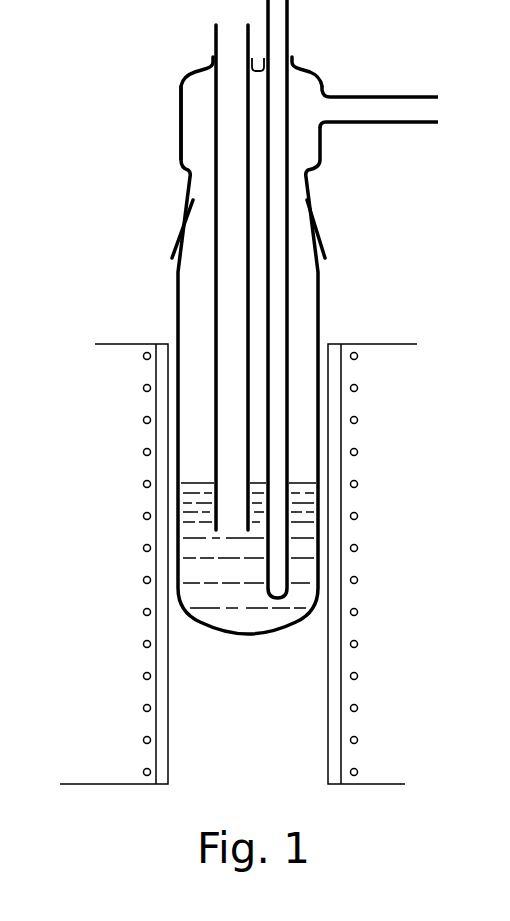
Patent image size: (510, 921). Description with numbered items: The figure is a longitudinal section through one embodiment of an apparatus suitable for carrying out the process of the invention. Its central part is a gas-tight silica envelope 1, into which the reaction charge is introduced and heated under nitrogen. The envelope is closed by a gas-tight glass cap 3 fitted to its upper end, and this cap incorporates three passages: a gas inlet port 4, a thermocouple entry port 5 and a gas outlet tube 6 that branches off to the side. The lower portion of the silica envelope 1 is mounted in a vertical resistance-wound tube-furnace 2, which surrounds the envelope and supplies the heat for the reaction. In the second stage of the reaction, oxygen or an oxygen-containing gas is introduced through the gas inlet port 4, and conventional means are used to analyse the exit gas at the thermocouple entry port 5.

The silica envelope 1 is at (176, 292).
The tube-furnace 2 is at (158, 540).
The glass cap 3 is at (180, 124).
The gas inlet port 4 is at (230, 60).
The thermocouple entry port 5 is at (292, 58).
The gas outlet tube 6 is at (362, 112).